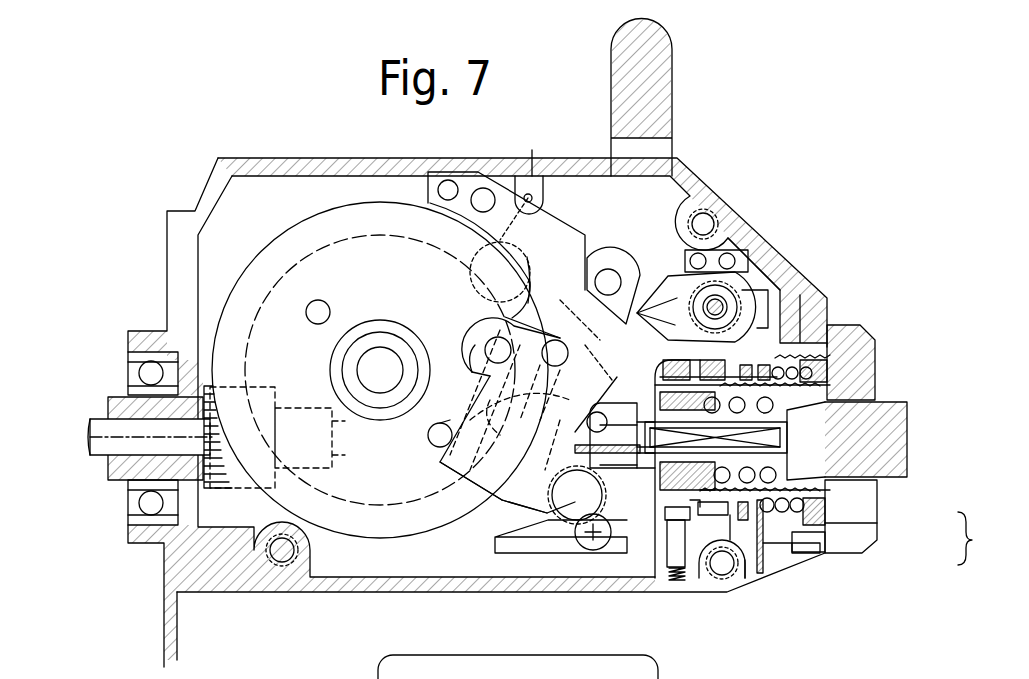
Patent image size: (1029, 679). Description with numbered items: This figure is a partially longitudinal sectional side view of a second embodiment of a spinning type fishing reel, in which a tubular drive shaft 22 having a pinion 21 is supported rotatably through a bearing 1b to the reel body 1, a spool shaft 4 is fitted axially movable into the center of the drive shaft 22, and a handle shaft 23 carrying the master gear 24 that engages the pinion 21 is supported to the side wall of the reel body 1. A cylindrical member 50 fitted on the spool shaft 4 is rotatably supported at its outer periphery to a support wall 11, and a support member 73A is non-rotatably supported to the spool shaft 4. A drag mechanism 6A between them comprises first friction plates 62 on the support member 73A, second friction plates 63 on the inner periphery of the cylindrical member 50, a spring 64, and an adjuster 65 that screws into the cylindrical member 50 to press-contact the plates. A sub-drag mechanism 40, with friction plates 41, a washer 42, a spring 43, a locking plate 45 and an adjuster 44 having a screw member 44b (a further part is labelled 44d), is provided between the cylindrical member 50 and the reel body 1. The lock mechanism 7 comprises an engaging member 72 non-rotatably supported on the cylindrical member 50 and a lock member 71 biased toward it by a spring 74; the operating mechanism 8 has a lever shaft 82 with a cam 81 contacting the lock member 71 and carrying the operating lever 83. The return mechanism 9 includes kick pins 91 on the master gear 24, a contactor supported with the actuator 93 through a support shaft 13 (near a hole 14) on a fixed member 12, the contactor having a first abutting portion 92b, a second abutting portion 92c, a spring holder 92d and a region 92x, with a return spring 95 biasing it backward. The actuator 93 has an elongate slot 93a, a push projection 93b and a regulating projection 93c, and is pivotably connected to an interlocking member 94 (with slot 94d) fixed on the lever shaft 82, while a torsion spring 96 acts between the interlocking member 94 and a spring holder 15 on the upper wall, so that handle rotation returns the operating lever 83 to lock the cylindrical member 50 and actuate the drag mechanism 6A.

The reel body 1 is at (357, 156).
The bearing 1b is at (138, 360).
The spool shaft 4 is at (104, 458).
The lock mechanism 7 is at (600, 560).
The operating mechanism 8 is at (732, 236).
The return mechanism 9 is at (522, 520).
The support wall 11 is at (730, 542).
The fixed member 12 is at (470, 357).
The support shaft 13 is at (492, 312).
The pivot hole 14 is at (488, 344).
The spring holder 15 is at (535, 150).
The pinion 21 is at (238, 489).
The drive shaft 22 is at (120, 396).
The handle shaft 23 is at (384, 362).
The master gear 24 is at (293, 236).
The sub-drag mechanism 40 is at (770, 527).
The friction plates 41 is at (780, 560).
The washer 42 is at (770, 572).
The spring 43 is at (800, 527).
The adjuster 44 is at (881, 522).
The screw member 44b is at (866, 510).
The lock nut 44d is at (868, 540).
The locking plate 45 is at (806, 550).
The cylindrical member 50 is at (728, 372).
The first friction plates 62 is at (702, 578).
The second friction plates 63 is at (712, 562).
The spring 64 is at (752, 545).
The adjuster 65 is at (907, 450).
The drag mechanism 6A is at (702, 307).
The lock member 71 is at (690, 522).
The engaging member 72 is at (672, 512).
The support member 73A is at (855, 400).
The spring 74 is at (678, 582).
The cam 81 is at (701, 259).
The lever shaft 82 is at (722, 300).
The operating lever 83 is at (666, 95).
The kick pins 91 is at (312, 320).
The first abutting portion 92b is at (428, 433).
The second abutting portion 92c is at (490, 252).
The spring holder 92d is at (488, 505).
The lever 92x is at (466, 396).
The actuator 93 is at (568, 354).
The elongate slot 93a is at (447, 520).
The push projection 93b is at (534, 200).
The regulating projection 93c is at (603, 340).
The interlocking member 94 is at (616, 255).
The cam slot 94d is at (611, 165).
The return spring 95 is at (560, 555).
The torsion spring 96 is at (510, 174).